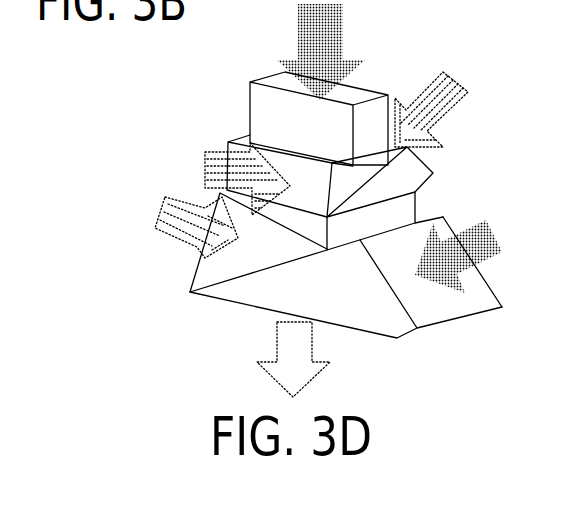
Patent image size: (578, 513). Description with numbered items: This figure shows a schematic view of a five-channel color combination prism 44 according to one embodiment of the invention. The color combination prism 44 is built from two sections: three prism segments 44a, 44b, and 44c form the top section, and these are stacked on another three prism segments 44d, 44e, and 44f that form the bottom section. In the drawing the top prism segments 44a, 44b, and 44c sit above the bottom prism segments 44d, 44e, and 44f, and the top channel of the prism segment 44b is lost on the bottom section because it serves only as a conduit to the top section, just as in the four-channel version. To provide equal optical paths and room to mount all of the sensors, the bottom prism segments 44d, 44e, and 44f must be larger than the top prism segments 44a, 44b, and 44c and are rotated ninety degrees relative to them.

The color combination prism 44 is at (568, 55).
The prism segment 44a is at (407, 170).
The prism segment 44b is at (265, 107).
The prism segment 44c is at (225, 147).
The prism segment 44d is at (400, 210).
The prism segment 44e is at (207, 270).
The prism segment 44f is at (268, 287).